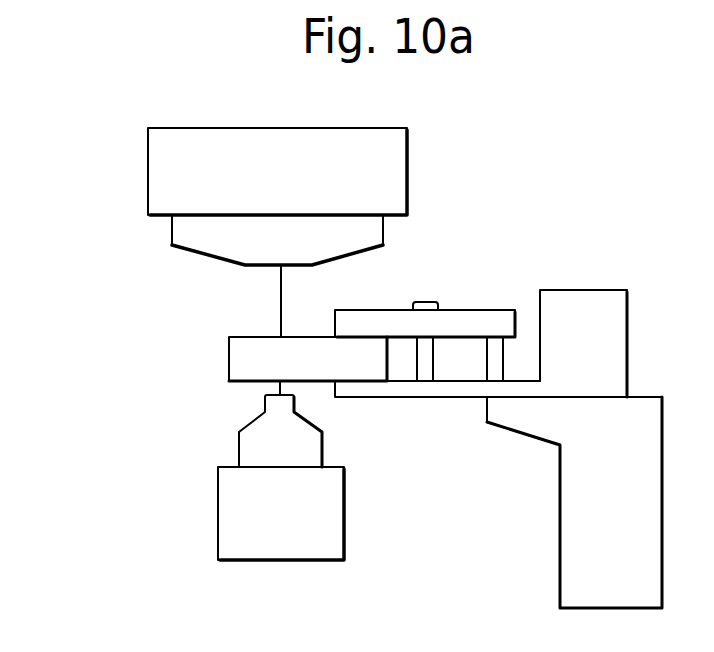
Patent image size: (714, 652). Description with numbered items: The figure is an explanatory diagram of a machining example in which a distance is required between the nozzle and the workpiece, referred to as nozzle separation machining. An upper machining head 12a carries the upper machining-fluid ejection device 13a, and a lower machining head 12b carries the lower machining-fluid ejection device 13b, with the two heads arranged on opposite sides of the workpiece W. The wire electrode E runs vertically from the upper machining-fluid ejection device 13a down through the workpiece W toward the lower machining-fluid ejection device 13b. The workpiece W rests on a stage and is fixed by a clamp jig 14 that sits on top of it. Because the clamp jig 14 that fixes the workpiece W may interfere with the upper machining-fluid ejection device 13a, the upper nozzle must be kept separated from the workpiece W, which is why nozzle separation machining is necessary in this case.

The machining head 12a is at (147, 168).
The machining-fluid ejection device 13a is at (172, 230).
The wire electrode E is at (281, 283).
The workpiece W is at (229, 353).
The clamp jig 14 is at (487, 310).
The machining-fluid ejection device 13b is at (239, 446).
The machining head 12b is at (218, 513).